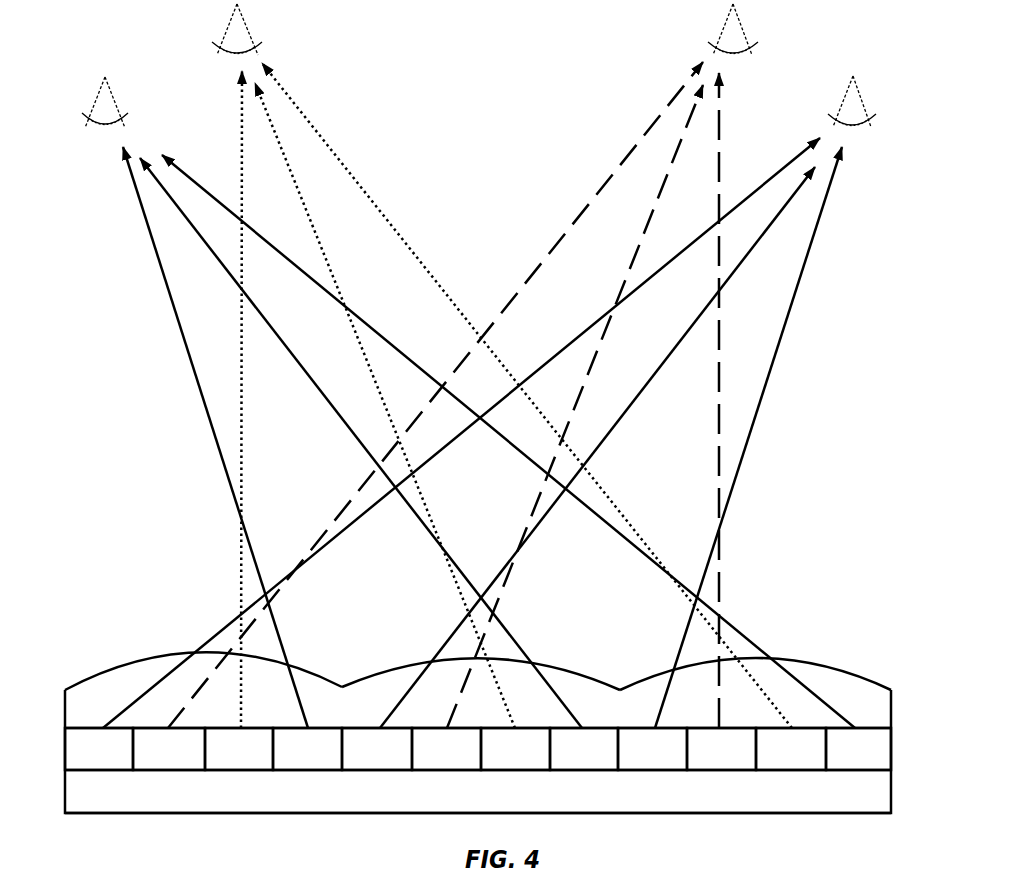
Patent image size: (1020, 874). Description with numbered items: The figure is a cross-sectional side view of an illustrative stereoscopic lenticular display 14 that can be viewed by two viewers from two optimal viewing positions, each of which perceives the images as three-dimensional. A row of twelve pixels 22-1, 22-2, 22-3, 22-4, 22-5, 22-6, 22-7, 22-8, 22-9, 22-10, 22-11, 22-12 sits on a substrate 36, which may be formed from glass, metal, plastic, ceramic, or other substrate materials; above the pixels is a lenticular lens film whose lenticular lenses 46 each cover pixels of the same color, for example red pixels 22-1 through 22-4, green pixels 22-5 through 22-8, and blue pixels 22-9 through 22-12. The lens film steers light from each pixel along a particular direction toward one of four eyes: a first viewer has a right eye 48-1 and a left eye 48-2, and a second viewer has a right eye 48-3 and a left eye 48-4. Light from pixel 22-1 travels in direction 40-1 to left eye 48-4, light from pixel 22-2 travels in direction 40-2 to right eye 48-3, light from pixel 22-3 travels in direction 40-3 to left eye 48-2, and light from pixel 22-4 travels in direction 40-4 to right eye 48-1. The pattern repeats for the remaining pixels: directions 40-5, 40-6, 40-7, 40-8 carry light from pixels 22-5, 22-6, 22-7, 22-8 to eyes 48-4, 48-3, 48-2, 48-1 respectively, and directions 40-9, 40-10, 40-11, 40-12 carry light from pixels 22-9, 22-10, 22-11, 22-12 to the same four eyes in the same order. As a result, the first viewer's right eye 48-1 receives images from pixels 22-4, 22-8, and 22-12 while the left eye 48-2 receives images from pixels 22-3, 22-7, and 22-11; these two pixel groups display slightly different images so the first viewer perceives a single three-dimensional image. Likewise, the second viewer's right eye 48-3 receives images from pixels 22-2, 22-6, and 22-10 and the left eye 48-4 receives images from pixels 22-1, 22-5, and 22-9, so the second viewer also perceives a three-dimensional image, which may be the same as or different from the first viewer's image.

The display 14 is at (76, 557).
The lenticular lens 46 is at (839, 625).
The substrate 36 is at (880, 795).
The pixel 22-1 is at (81, 760).
The pixel 22-2 is at (151, 760).
The pixel 22-3 is at (221, 760).
The pixel 22-4 is at (289, 760).
The pixel 22-5 is at (359, 760).
The pixel 22-6 is at (428, 760).
The pixel 22-7 is at (497, 760).
The pixel 22-8 is at (566, 760).
The pixel 22-9 is at (634, 760).
The pixel 22-10 is at (698, 760).
The pixel 22-11 is at (768, 760).
The pixel 22-12 is at (835, 760).
The direction 40-1 is at (142, 697).
The direction 40-2 is at (650, 135).
The direction 40-3 is at (240, 412).
The direction 40-4 is at (172, 312).
The direction 40-5 is at (627, 408).
The direction 40-6 is at (657, 197).
The direction 40-7 is at (360, 343).
The direction 40-8 is at (200, 240).
The direction 40-9 is at (798, 288).
The direction 40-10 is at (722, 552).
The direction 40-11 is at (366, 197).
The direction 40-12 is at (200, 185).
The right eye 48-1 is at (110, 82).
The left eye 48-2 is at (242, 10).
The right eye 48-3 is at (738, 12).
The left eye 48-4 is at (858, 84).